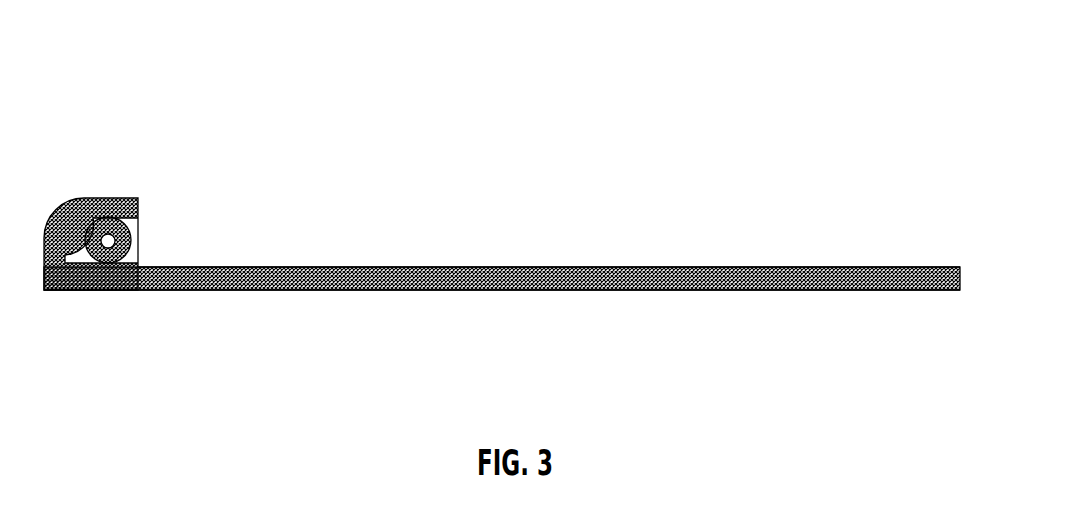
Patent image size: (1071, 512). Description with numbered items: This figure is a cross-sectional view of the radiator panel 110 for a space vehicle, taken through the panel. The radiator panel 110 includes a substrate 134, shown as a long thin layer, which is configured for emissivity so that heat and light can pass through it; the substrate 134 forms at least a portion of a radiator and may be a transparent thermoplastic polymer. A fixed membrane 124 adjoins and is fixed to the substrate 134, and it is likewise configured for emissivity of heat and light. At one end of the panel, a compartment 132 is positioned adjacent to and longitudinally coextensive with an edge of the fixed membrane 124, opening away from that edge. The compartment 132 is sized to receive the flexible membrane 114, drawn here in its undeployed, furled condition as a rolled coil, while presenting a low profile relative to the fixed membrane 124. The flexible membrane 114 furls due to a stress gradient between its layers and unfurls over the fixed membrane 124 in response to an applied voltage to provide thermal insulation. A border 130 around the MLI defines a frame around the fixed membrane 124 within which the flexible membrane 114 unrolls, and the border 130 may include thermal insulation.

The radiator panel 110 is at (502, 175).
The border 130 is at (955, 292).
The fixed membrane 124 is at (575, 267).
The substrate 134 is at (330, 290).
The compartment 132 is at (105, 183).
The flexible membrane 114 is at (138, 237).